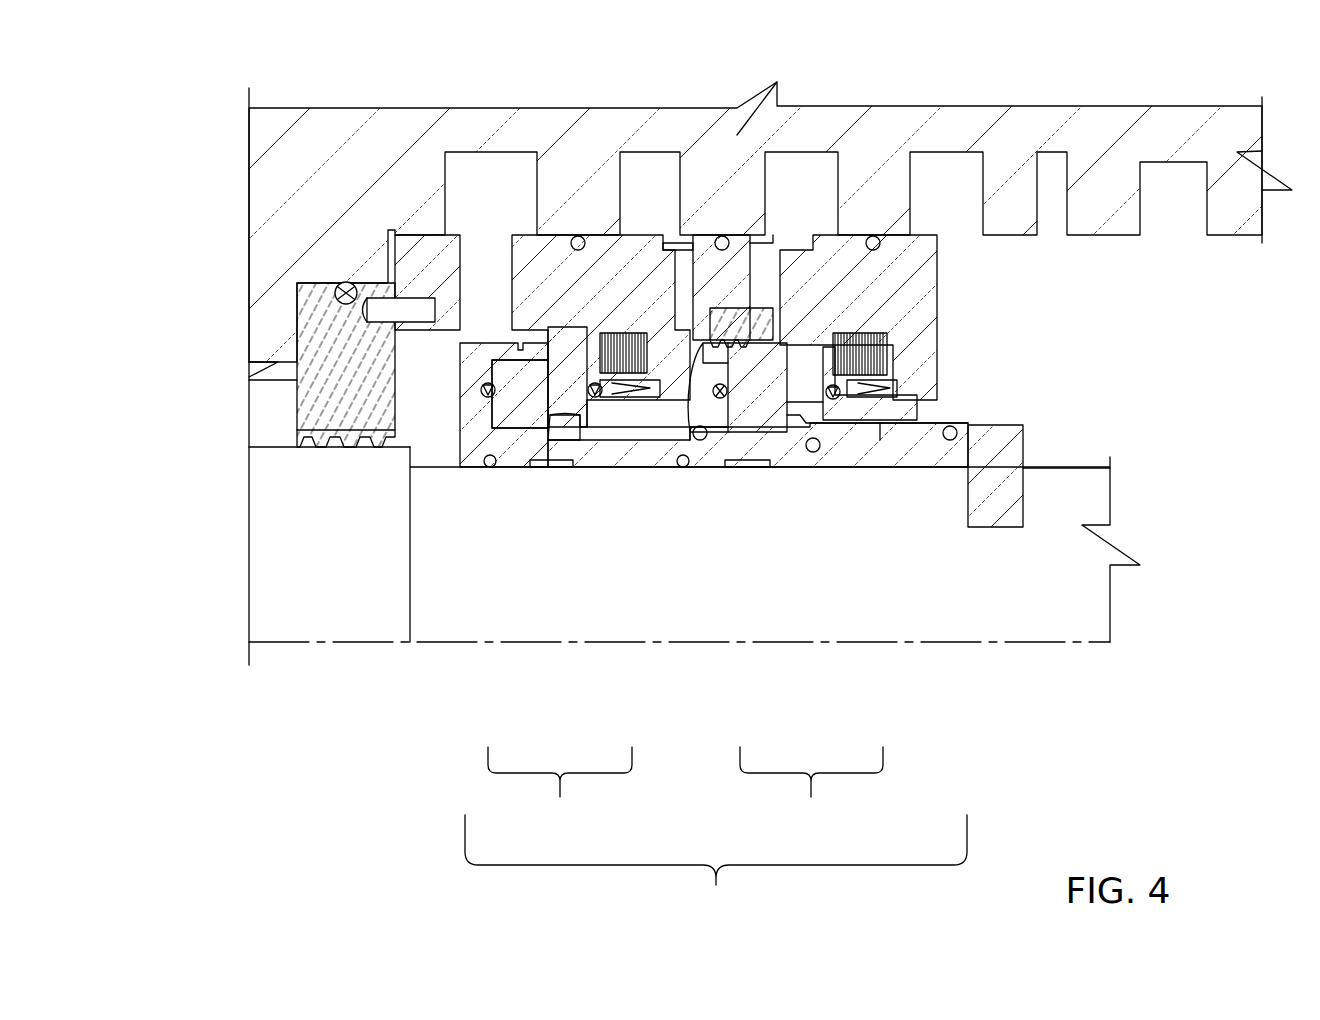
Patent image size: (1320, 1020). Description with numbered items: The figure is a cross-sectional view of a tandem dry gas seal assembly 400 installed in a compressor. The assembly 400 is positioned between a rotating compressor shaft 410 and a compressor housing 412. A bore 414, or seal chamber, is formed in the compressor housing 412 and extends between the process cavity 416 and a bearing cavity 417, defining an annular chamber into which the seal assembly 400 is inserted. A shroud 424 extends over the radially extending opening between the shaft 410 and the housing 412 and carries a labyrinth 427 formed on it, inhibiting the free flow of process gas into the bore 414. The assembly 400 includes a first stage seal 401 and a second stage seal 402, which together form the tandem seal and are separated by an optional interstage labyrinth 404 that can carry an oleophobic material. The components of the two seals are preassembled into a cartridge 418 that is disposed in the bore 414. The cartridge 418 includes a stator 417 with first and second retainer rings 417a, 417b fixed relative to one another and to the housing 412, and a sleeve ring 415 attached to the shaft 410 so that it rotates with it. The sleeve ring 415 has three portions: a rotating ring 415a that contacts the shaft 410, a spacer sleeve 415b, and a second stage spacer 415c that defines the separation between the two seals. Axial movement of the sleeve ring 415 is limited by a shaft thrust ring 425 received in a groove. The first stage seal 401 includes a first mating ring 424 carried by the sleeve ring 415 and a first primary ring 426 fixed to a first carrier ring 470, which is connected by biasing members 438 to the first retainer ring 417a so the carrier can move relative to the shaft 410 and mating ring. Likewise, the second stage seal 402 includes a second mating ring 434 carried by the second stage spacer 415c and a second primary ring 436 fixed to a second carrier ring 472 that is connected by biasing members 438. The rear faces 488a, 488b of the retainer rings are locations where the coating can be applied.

The dry gas seal assembly 400 is at (437, 428).
The first stage seal 401 is at (560, 788).
The second stage seal 402 is at (811, 788).
The interstage labyrinth 404 is at (730, 325).
The rotating compressor shaft 410 is at (443, 523).
The compressor housing 412 is at (278, 147).
The bore 414 is at (402, 222).
The sleeve ring 415 is at (883, 464).
The rotating ring 415a is at (612, 470).
The spacer sleeve 415b is at (930, 460).
The second stage spacer 415c is at (652, 443).
The process cavity 416 is at (203, 252).
The stator 417 is at (1157, 345).
The first retainer ring 417a is at (555, 265).
The second retainer ring 417b is at (848, 255).
The cartridge 418 is at (716, 865).
The shroud 424 is at (319, 355).
The shaft thrust ring 425 is at (1022, 437).
The first primary ring 426 is at (567, 378).
The labyrinth 427 is at (305, 438).
The second mating ring 434 is at (762, 378).
The second primary ring 436 is at (803, 378).
The biasing members 438 is at (605, 345).
The first carrier ring 470 is at (598, 410).
The second carrier ring 472 is at (905, 412).
The rear face 488a is at (675, 340).
The rear face 488b is at (943, 280).